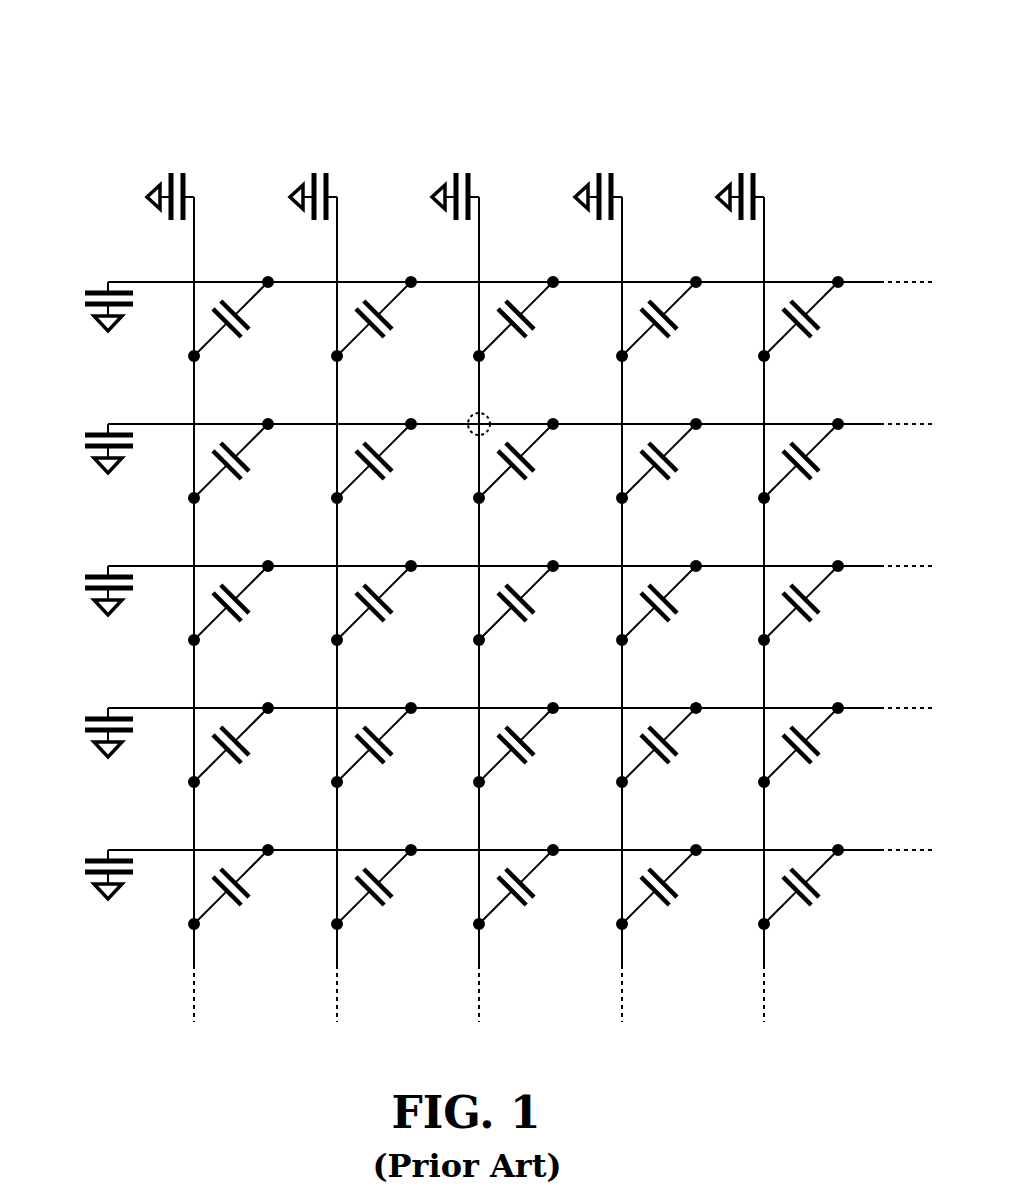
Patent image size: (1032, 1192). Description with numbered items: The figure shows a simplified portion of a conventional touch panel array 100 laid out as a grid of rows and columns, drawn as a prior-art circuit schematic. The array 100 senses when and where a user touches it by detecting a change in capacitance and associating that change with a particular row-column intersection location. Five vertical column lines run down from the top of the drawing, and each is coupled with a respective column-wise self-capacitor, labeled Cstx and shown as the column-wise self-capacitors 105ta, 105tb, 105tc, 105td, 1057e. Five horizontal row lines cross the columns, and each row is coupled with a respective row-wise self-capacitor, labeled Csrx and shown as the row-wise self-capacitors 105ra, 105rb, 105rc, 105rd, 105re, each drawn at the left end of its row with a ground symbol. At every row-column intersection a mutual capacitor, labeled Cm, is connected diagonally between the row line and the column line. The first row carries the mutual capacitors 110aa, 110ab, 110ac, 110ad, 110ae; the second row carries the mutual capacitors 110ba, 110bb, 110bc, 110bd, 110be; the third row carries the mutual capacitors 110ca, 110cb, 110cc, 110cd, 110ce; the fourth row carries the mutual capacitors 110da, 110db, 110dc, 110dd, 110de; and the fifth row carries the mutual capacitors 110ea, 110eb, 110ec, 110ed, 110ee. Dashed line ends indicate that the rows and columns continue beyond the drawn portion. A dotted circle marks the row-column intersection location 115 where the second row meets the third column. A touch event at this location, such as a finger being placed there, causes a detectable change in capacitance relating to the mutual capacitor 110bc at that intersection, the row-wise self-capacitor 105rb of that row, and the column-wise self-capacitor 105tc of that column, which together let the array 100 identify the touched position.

The touch panel array 100 is at (204, 54).
The column-wise self-capacitor Cstx 105ta is at (206, 152).
The column-wise self-capacitor Cstx 105tb is at (349, 152).
The column-wise self-capacitor Cstx 105tc is at (490, 152).
The column-wise self-capacitor Cstx 105td is at (634, 152).
The column-wise self-capacitor Cstx 1057e is at (777, 152).
The row-wise self-capacitor Csrx 105ra is at (78, 321).
The row-wise self-capacitor Csrx 105rb is at (78, 451).
The row-wise self-capacitor Csrx 105rc is at (78, 593).
The row-wise self-capacitor Csrx 105rd is at (78, 735).
The row-wise self-capacitor Csrx 105re is at (78, 877).
The mutual capacitor Cm 110aa is at (310, 389).
The mutual capacitor 110ab is at (454, 365).
The mutual capacitor 110ac is at (594, 365).
The mutual capacitor 110ad is at (739, 365).
The mutual capacitor 110ae is at (879, 365).
The mutual capacitor 110ba is at (311, 507).
The mutual capacitor 110bb is at (455, 507).
The mutual capacitor 110bc is at (595, 507).
The mutual capacitor 110bd is at (740, 507).
The mutual capacitor 110be is at (880, 507).
The mutual capacitor 110ca is at (309, 649).
The mutual capacitor 110cb is at (453, 649).
The mutual capacitor 110cc is at (593, 649).
The mutual capacitor 110cd is at (738, 649).
The mutual capacitor 110ce is at (878, 649).
The mutual capacitor 110da is at (311, 791).
The mutual capacitor 110db is at (455, 791).
The mutual capacitor 110dc is at (595, 791).
The mutual capacitor 110dd is at (740, 791).
The mutual capacitor 110de is at (880, 791).
The mutual capacitor 110ea is at (309, 933).
The mutual capacitor 110eb is at (453, 933).
The mutual capacitor 110ec is at (593, 933).
The mutual capacitor 110ed is at (738, 933).
The mutual capacitor 110ee is at (878, 933).
The row-column intersection location 115 is at (529, 412).